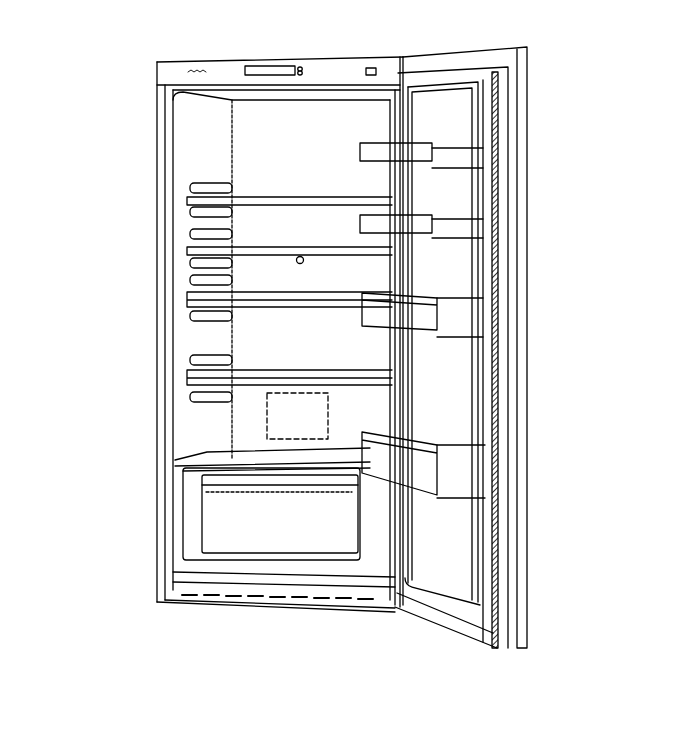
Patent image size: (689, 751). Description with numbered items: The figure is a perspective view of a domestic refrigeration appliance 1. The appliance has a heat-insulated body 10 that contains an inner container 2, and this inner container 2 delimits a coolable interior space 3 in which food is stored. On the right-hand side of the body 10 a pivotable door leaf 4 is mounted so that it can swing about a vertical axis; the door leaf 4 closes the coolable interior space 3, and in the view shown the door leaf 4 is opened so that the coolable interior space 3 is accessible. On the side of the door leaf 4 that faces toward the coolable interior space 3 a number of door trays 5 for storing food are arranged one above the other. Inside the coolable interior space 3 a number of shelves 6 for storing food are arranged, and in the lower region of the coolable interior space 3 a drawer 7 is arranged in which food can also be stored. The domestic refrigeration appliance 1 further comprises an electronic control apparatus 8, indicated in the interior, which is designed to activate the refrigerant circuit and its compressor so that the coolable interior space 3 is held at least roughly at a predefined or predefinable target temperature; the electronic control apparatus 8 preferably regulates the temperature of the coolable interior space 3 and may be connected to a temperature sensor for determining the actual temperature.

The domestic refrigeration appliance 1 is at (85, 96).
The inner container 2 is at (183, 229).
The coolable interior space 3 is at (296, 146).
The door leaf 4 is at (522, 580).
The door trays 5 is at (463, 463).
The shelves 6 is at (287, 200).
The drawer 7 is at (290, 535).
The electronic control apparatus 8 is at (306, 432).
The heat-insulated body 10 is at (165, 574).